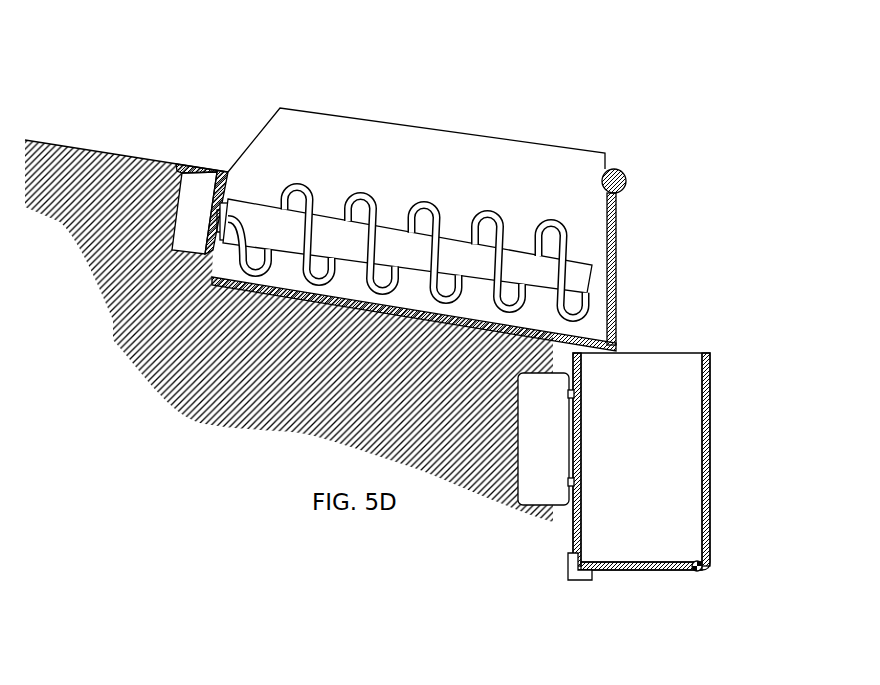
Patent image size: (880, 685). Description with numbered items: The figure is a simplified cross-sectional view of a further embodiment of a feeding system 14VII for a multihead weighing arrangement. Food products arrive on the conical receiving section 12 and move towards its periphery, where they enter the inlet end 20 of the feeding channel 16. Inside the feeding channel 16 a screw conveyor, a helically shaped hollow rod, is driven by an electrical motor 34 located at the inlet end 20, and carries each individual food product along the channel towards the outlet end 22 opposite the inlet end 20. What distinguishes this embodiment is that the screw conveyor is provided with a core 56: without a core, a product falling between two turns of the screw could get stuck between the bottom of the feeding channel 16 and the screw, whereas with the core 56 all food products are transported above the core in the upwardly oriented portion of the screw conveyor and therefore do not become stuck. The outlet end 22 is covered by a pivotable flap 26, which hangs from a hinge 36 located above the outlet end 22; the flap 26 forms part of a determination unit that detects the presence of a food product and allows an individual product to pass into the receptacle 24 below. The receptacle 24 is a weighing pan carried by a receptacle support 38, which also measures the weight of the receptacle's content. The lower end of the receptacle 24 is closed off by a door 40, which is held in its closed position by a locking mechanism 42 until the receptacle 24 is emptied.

The receiving section 12 is at (38, 127).
The feeding system 14VII is at (472, 103).
The electrical motor 34 is at (192, 208).
The inlet end 20 is at (236, 183).
The core 56 is at (260, 200).
The feeding channel 16 is at (333, 202).
The hinge 36 is at (626, 181).
The pivotable flap 26 is at (618, 222).
The outlet end 22 is at (618, 322).
The receptacle 24 is at (720, 414).
The receptacle support 38 is at (553, 425).
The door 40 is at (647, 570).
The locking mechanism 42 is at (627, 0).